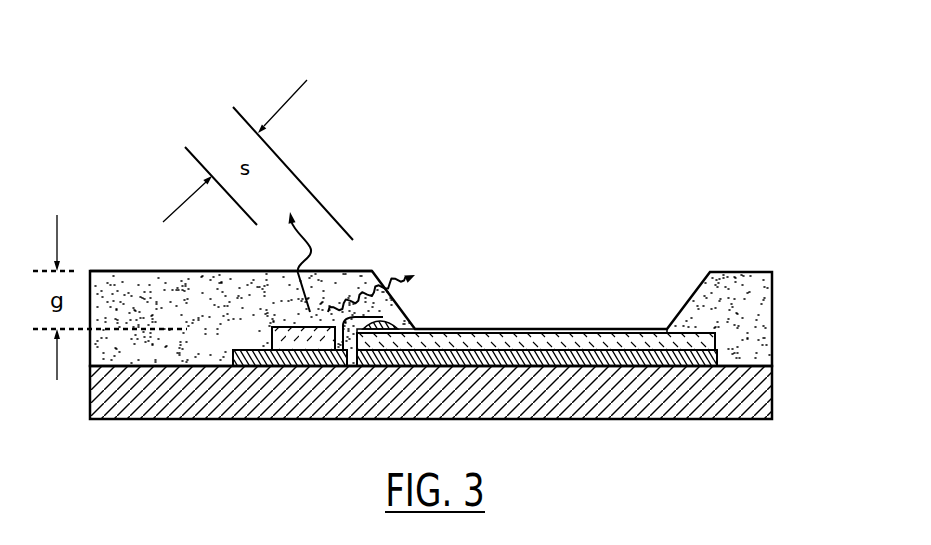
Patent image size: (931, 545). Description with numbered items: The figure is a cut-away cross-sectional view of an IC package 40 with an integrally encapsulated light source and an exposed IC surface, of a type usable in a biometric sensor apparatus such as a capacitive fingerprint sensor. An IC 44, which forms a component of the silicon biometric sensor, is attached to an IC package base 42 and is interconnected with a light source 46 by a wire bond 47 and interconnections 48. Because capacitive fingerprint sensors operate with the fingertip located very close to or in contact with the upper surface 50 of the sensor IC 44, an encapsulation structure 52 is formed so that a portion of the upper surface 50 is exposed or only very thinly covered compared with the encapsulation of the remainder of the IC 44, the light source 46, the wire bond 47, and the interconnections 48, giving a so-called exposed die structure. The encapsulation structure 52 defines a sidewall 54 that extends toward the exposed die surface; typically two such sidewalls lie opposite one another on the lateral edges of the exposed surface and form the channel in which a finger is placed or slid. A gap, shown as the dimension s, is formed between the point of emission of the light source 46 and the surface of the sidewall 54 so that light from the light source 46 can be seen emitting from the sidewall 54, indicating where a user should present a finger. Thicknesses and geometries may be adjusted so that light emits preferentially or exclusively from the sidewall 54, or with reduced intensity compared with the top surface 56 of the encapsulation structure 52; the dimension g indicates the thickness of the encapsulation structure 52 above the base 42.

The IC package 40 is at (89, 78).
The IC package base 42 is at (801, 392).
The IC 44 is at (801, 338).
The light source 46 is at (190, 446).
The wire bond 47 is at (462, 297).
The interconnections 48 is at (380, 360).
The upper surface 50 is at (630, 282).
The encapsulation structure 52 is at (801, 293).
The sidewall 54 is at (432, 267).
The top surface 56 is at (139, 271).